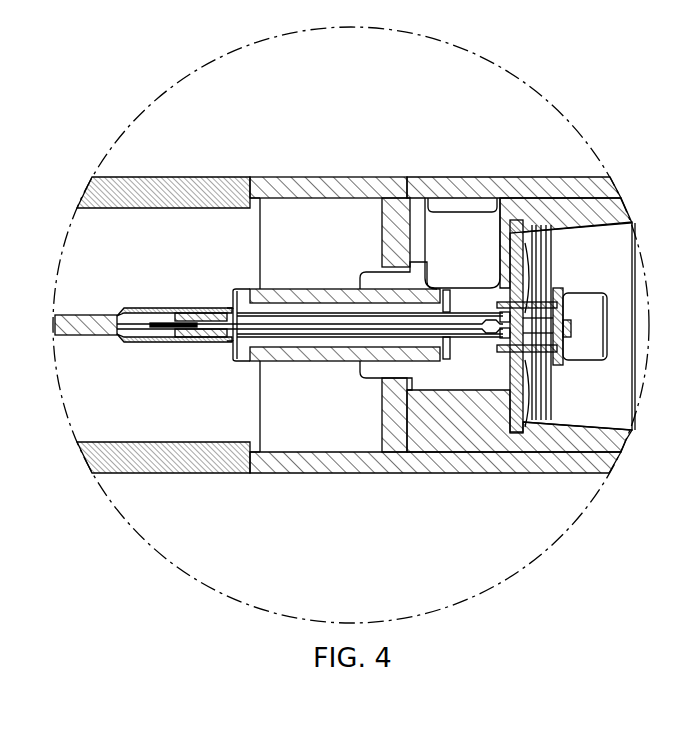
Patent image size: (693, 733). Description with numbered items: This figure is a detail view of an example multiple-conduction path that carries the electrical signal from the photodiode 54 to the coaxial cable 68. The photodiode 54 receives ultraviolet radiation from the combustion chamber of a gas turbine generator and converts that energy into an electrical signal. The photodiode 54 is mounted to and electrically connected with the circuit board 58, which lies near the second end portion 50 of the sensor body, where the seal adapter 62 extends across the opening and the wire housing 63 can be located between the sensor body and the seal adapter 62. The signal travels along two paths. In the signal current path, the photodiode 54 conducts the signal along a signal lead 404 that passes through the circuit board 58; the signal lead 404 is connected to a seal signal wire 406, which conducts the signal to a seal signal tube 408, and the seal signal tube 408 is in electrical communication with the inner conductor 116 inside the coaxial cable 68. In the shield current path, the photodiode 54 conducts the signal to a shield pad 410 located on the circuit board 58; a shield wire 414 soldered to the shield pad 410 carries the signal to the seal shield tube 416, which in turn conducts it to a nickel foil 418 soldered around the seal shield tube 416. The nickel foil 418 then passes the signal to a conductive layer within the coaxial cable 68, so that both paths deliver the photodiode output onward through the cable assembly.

The second end portion 50 is at (612, 192).
The photodiode 54 is at (607, 310).
The circuit board 58 is at (508, 382).
The seal adapter 62 is at (148, 177).
The wire housing 63 is at (477, 473).
The coaxial cable 68 is at (82, 336).
The inner conductor 116 is at (155, 328).
The signal lead 404 is at (533, 340).
The seal signal wire 406 is at (367, 329).
The seal signal tube 408 is at (195, 337).
The shield pad 410 is at (523, 263).
The shield wire 414 is at (470, 288).
The seal shield tube 416 is at (298, 301).
The nickel foil 418 is at (160, 308).